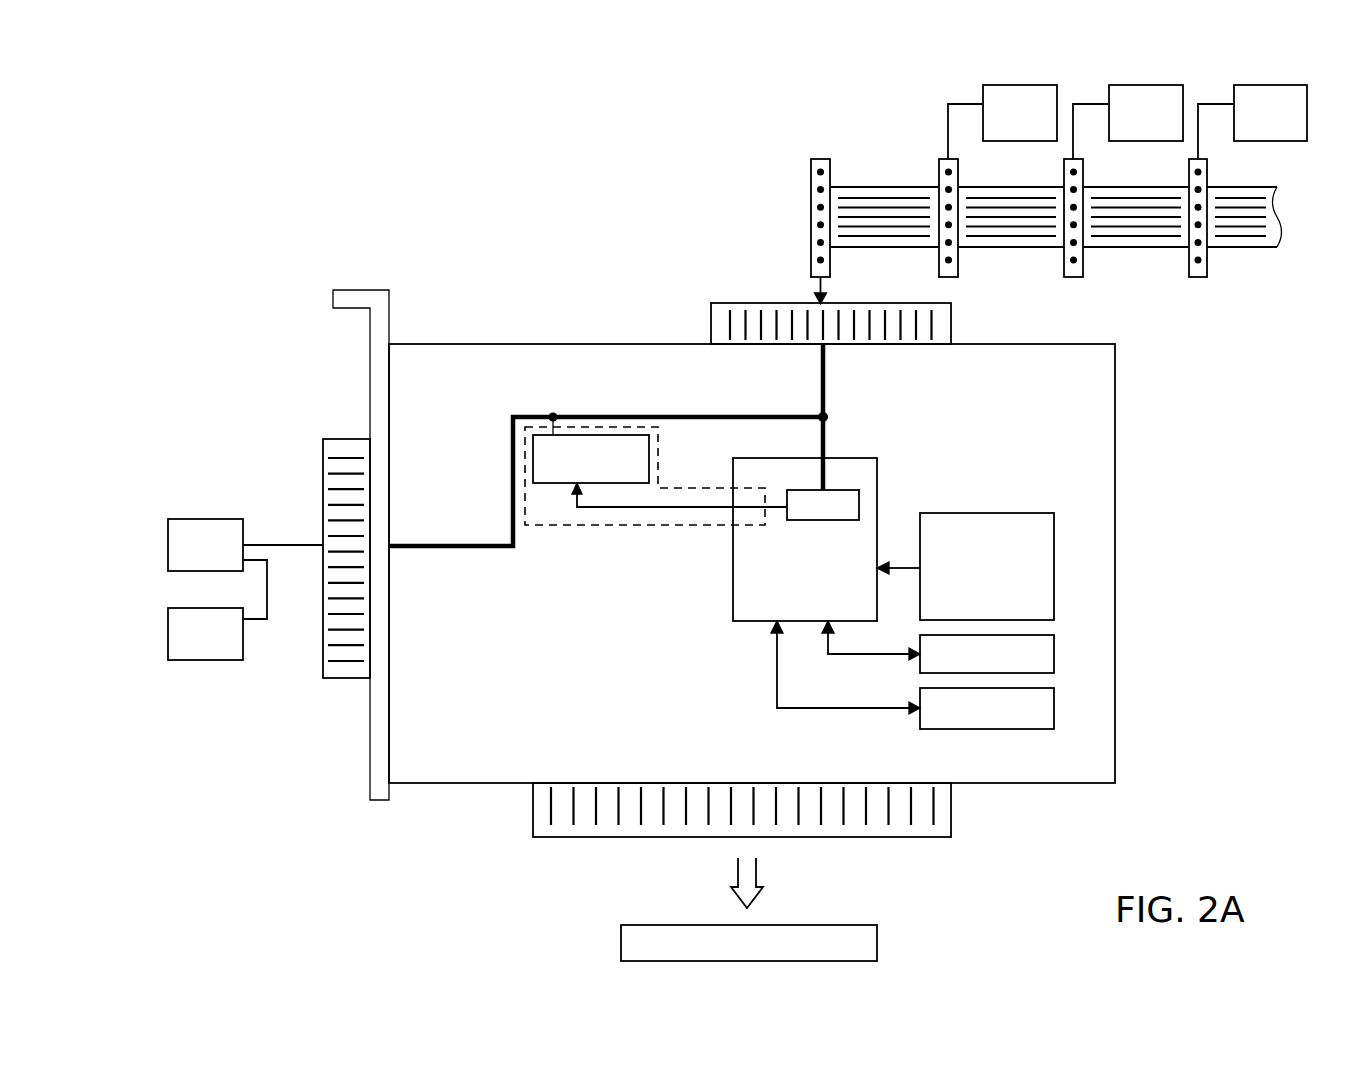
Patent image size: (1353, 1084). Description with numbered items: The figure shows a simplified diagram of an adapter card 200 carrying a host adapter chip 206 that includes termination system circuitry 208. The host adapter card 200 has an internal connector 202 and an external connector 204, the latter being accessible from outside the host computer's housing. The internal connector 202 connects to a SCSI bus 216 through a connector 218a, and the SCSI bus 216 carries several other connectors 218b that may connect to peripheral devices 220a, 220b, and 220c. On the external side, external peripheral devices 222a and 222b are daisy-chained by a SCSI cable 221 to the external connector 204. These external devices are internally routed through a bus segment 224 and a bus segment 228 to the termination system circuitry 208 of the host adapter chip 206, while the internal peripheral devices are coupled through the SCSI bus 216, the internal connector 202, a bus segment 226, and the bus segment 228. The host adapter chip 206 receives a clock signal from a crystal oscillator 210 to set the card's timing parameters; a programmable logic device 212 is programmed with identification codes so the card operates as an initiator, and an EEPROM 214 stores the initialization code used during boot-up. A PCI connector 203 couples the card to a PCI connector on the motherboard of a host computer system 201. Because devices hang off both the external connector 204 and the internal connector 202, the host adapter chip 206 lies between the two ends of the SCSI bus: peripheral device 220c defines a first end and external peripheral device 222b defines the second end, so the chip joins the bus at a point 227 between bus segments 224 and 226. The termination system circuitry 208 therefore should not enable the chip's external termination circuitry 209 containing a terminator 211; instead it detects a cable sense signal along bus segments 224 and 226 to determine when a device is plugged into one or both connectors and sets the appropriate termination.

The adapter card 200 is at (1115, 378).
The host computer system 201 is at (844, 924).
The internal connector 202 is at (711, 321).
The PCI connector 203 is at (952, 820).
The external connector 204 is at (343, 438).
The host adapter chip 206 is at (878, 483).
The termination system circuitry 208 is at (843, 489).
The external termination circuitry 209 is at (545, 526).
The crystal oscillator 210 is at (992, 513).
The terminator 211 is at (612, 435).
The programmable logic device 212 is at (1049, 636).
The EEPROM memory device 214 is at (1049, 690).
The SCSI bus 216 is at (876, 187).
The connector 218a is at (818, 158).
The connectors 218b is at (942, 278).
The peripheral device 220a is at (1029, 142).
The peripheral device 220b is at (1154, 142).
The peripheral device 220c is at (1279, 142).
The SCSI cable 221 is at (268, 541).
The external peripheral device 222a is at (183, 518).
The external peripheral device 222b is at (208, 662).
The bus segment 224 is at (432, 548).
The bus segment 226 is at (824, 381).
The point 227 is at (824, 415).
The bus segment 228 is at (821, 434).